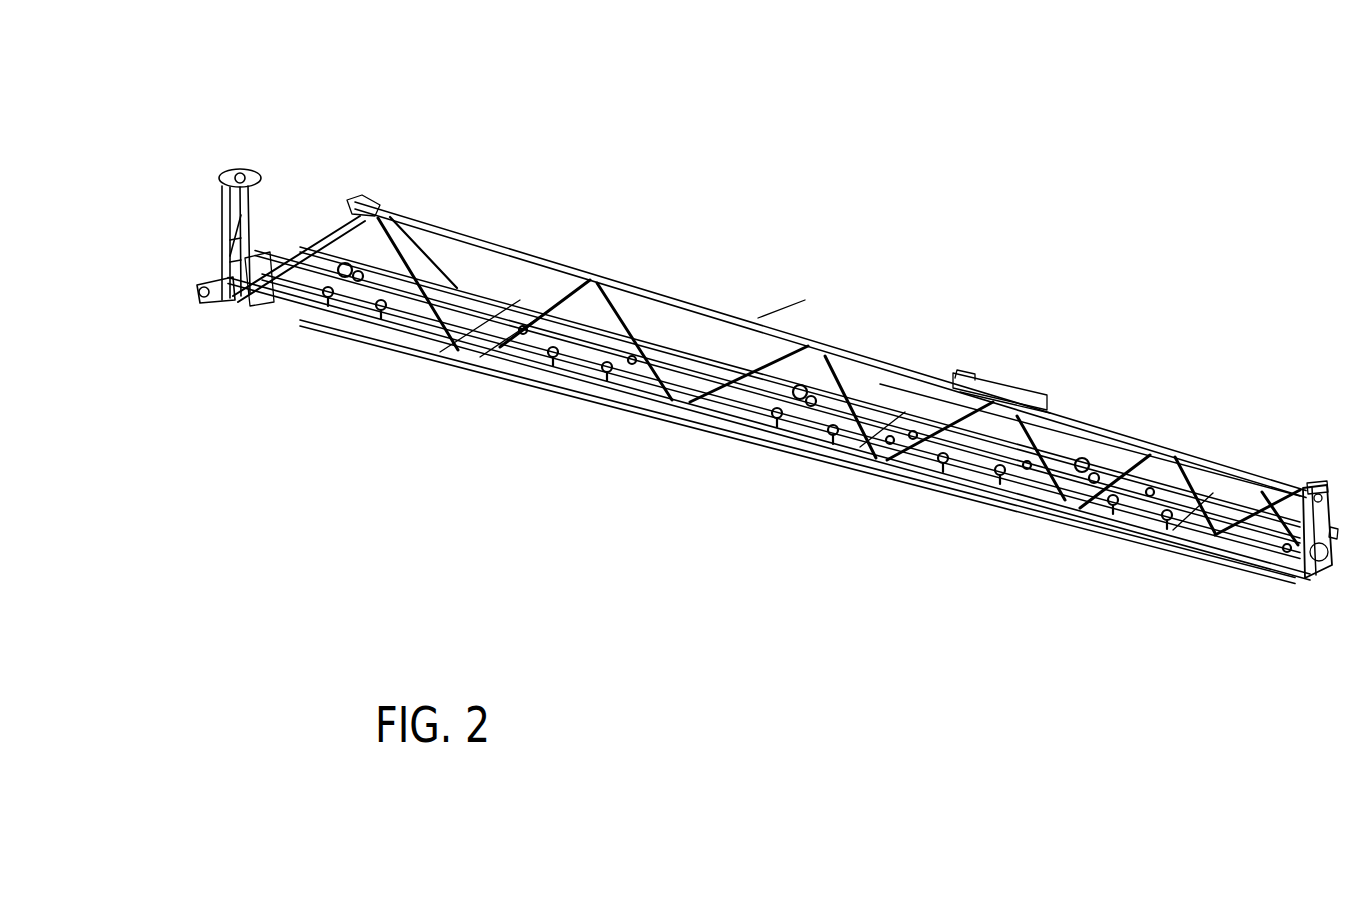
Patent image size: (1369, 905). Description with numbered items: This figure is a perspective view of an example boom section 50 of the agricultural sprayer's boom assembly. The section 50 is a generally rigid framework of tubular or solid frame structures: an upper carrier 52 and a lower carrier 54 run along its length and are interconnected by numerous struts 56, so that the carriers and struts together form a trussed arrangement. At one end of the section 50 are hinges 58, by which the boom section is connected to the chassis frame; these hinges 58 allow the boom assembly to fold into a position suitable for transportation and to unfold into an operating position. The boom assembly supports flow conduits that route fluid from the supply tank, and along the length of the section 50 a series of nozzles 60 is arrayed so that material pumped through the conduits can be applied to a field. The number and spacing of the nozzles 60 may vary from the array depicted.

The boom section 50 is at (427, 134).
The upper carrier 52 is at (667, 293).
The lower carrier 54 is at (573, 357).
The strut 56 is at (433, 262).
The hinge 58 is at (245, 170).
The nozzle 60 is at (328, 296).